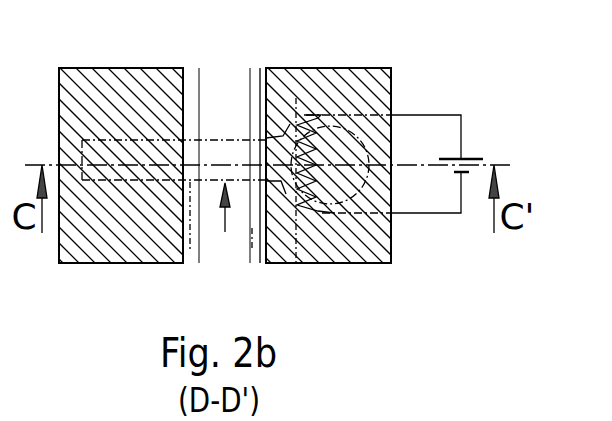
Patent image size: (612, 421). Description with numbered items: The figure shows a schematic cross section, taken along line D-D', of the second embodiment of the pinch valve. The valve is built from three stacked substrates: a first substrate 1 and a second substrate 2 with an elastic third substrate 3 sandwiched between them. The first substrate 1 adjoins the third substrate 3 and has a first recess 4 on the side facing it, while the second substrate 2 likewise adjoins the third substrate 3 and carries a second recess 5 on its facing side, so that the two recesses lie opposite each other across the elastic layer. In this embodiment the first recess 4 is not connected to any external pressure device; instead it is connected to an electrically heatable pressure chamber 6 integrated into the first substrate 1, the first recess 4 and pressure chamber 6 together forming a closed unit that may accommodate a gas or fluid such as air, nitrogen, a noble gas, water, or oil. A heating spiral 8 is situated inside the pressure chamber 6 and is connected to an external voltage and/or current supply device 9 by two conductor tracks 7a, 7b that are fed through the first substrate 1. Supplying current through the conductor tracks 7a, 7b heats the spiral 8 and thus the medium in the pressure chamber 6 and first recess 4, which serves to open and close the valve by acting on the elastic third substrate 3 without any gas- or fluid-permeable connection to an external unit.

The first substrate 1 is at (152, 112).
The second substrate 2 is at (117, 225).
The third substrate 3 is at (91, 112).
The first recess 4 is at (212, 140).
The second recess 5 is at (217, 223).
The electrically heatable pressure chamber 6 is at (298, 264).
The conductor track 7a is at (352, 225).
The conductor track 7b is at (354, 130).
The heating spiral 8 is at (290, 97).
The external voltage and/or current supply device 9 is at (466, 157).